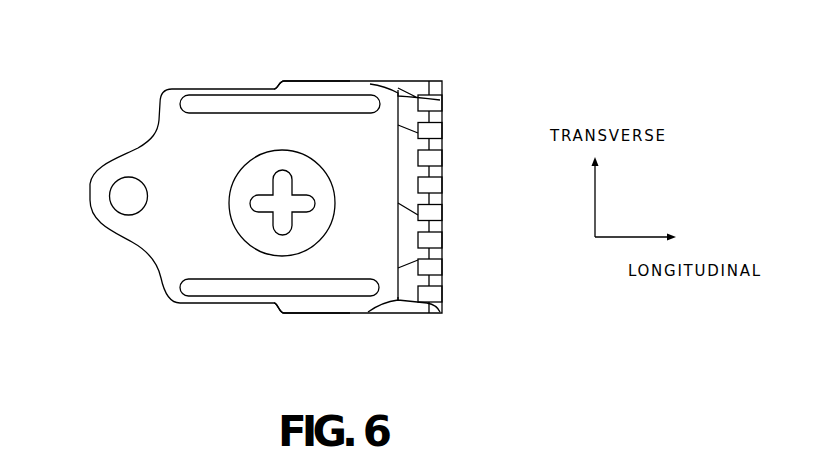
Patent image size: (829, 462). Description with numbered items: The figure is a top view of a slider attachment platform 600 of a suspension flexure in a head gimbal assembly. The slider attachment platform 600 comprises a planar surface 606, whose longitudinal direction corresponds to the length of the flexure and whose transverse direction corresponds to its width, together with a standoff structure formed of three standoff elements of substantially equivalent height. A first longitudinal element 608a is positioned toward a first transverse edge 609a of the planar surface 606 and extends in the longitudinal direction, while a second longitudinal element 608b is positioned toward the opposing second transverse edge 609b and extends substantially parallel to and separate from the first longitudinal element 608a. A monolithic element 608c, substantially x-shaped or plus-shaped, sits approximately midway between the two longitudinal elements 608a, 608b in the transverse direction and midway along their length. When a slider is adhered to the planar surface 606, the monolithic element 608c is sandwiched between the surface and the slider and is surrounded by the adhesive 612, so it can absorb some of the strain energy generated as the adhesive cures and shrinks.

The slider attachment platform 600 is at (114, 95).
The planar surface 606 is at (159, 238).
The first longitudinal element 608a is at (399, 304).
The second longitudinal element 608b is at (373, 84).
The monolithic element 608c is at (288, 203).
The first transverse edge 609a is at (341, 314).
The second transverse edge 609b is at (345, 83).
The adhesive 612 is at (322, 166).